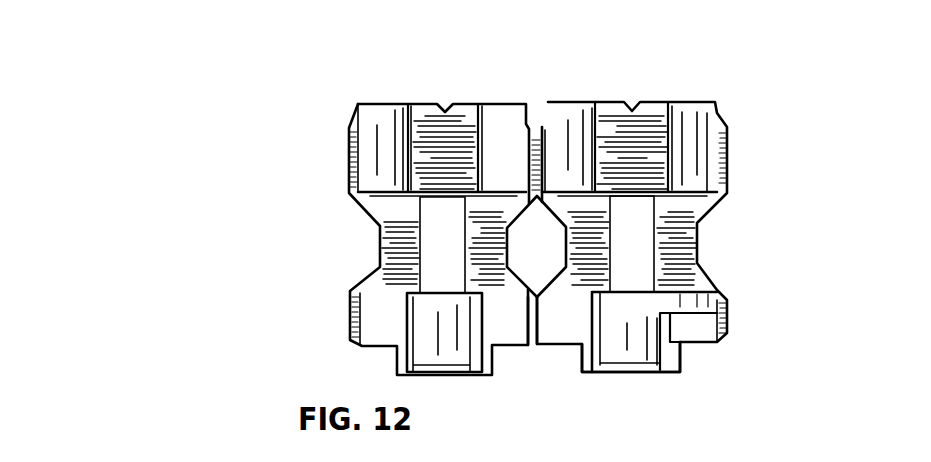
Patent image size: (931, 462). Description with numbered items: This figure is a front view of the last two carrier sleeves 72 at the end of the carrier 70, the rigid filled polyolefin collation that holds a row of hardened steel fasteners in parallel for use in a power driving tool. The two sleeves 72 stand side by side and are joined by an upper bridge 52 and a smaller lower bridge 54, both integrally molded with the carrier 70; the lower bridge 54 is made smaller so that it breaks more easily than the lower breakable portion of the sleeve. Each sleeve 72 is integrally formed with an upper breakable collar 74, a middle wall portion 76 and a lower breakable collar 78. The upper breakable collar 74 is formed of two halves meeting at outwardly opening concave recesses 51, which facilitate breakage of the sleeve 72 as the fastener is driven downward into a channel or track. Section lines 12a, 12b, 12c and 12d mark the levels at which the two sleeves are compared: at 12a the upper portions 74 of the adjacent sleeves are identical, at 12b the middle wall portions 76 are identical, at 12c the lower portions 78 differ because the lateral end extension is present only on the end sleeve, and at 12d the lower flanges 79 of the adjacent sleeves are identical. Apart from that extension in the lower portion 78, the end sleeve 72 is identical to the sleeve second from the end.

The carrier 70 is at (372, 117).
The concave recess 51 is at (445, 110).
The upper bridge 52 is at (535, 128).
The carrier sleeve 72 is at (567, 110).
The upper breakable collar 74 is at (617, 127).
The middle wall portion 76 is at (667, 268).
The lower bridge 54 is at (537, 345).
The lower breakable collar 78 is at (652, 347).
The lower flange 79 is at (593, 365).
The section line 12a is at (302, 140).
The section line 12b is at (297, 228).
The section line 12c is at (257, 291).
The section line 12d is at (285, 347).